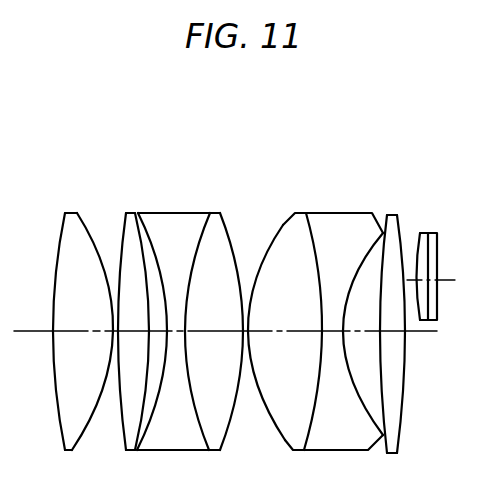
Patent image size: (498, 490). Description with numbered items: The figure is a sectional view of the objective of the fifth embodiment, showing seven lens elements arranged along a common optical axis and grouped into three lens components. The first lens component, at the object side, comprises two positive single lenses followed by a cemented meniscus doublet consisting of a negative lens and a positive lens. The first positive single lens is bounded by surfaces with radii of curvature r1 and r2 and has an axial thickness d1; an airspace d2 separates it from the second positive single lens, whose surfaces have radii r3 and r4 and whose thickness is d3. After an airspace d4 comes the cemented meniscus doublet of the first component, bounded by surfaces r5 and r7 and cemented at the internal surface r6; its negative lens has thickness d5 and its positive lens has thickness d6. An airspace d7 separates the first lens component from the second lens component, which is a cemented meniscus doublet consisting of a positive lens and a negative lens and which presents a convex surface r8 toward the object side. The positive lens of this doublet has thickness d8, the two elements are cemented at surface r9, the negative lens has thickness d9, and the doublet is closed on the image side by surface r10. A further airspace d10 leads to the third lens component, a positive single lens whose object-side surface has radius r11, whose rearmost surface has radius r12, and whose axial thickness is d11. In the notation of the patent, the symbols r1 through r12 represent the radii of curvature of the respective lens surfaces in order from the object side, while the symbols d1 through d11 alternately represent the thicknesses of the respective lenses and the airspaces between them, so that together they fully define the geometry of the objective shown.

The radius of curvature of first lens surface r1 is at (62, 227).
The radius of curvature of second lens surface r2 is at (90, 227).
The radius of curvature of third lens surface r3 is at (116, 227).
The radius of curvature of fourth lens surface r4 is at (134, 228).
The radius of curvature of fifth lens surface r5 is at (153, 233).
The radius of curvature of sixth lens surface r6 is at (203, 228).
The radius of curvature of seventh lens surface r7 is at (230, 226).
The radius of curvature of eighth lens surface r8 is at (284, 226).
The radius of curvature of ninth lens surface r9 is at (318, 226).
The radius of curvature of tenth lens surface r10 is at (374, 246).
The radius of curvature of eleventh lens surface r11 is at (388, 234).
The radius of curvature of twelfth lens surface r12 is at (402, 240).
The thickness of first lens d1 is at (79, 333).
The airspace between first and second lenses d2 is at (113, 326).
The thickness of second lens d3 is at (132, 333).
The airspace between second lens and cemented doublet d4 is at (158, 328).
The thickness of negative lens of first doublet d5 is at (177, 337).
The thickness of positive lens of first doublet d6 is at (213, 337).
The airspace between first and second lens components d7 is at (245, 326).
The thickness of positive lens of second doublet d8 is at (282, 335).
The thickness of negative lens of second doublet d9 is at (333, 337).
The airspace between second and third lens components d10 is at (360, 337).
The thickness of third lens component d11 is at (392, 337).